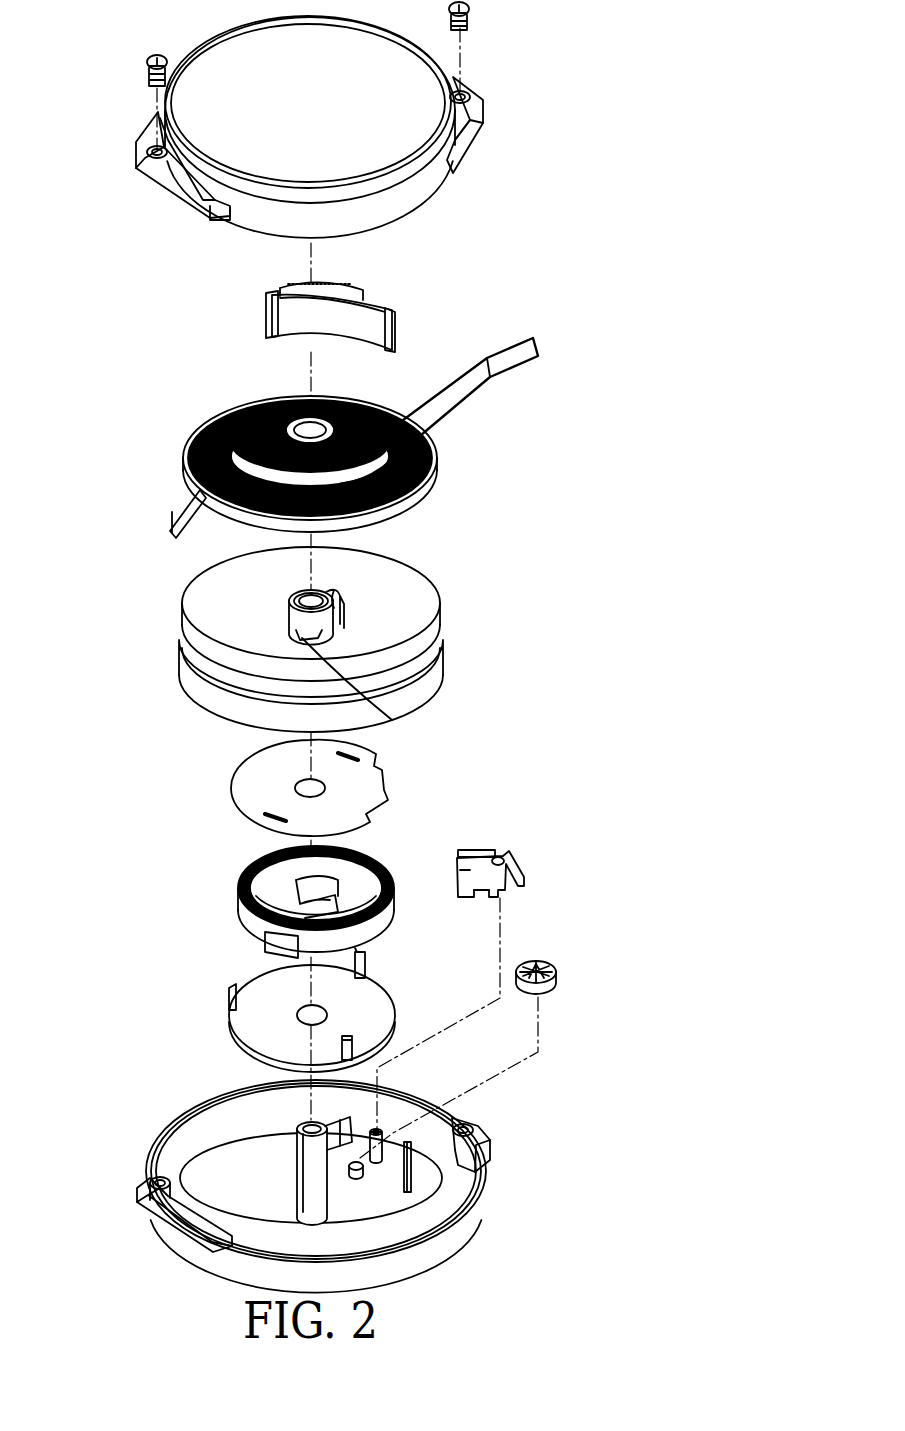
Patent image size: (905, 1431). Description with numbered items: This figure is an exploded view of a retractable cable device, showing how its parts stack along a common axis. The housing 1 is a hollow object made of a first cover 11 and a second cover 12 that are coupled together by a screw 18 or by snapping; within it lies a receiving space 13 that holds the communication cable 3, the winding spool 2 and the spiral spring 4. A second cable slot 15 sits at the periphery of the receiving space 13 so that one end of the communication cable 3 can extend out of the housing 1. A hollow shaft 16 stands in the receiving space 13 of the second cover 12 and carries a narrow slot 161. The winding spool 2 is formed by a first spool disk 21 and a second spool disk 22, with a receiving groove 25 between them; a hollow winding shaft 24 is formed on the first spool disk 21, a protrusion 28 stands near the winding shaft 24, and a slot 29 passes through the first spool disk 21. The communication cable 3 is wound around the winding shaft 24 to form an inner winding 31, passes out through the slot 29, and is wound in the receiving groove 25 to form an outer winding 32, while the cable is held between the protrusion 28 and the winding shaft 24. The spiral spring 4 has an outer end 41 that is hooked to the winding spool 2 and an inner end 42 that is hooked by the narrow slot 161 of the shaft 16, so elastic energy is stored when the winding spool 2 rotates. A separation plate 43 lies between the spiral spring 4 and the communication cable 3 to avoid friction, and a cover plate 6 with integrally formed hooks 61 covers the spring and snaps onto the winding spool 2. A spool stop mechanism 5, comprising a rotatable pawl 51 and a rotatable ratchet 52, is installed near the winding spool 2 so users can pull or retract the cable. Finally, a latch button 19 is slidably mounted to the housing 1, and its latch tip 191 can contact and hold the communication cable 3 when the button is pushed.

The housing 1 is at (132, 121).
The first cover 11 is at (432, 186).
The second cover 12 is at (424, 1104).
The receiving space 13 is at (207, 1196).
The second cable slot 15 is at (218, 222).
The shaft 16 is at (303, 1198).
The narrow slot 161 is at (330, 1196).
The screw 18 is at (466, 30).
The latch button 19 is at (360, 320).
The latch tip 191 is at (398, 330).
The winding spool 2 is at (190, 700).
The first spool disk 21 is at (210, 613).
The second spool disk 22 is at (232, 698).
The winding shaft 24 is at (288, 610).
The receiving groove 25 is at (405, 688).
The protrusion 28 is at (340, 602).
The slot 29 is at (364, 692).
The communication cable 3 is at (436, 472).
The inner winding 31 is at (205, 430).
The outer winding 32 is at (186, 459).
The spiral spring 4 is at (246, 920).
The outer end 41 is at (276, 942).
The inner end 42 is at (290, 890).
The separation plate 43 is at (355, 802).
The spool stop mechanism 5 is at (518, 940).
The pawl 51 is at (492, 862).
The ratchet 52 is at (546, 990).
The cover plate 6 is at (376, 1025).
The hooks 61 is at (368, 968).